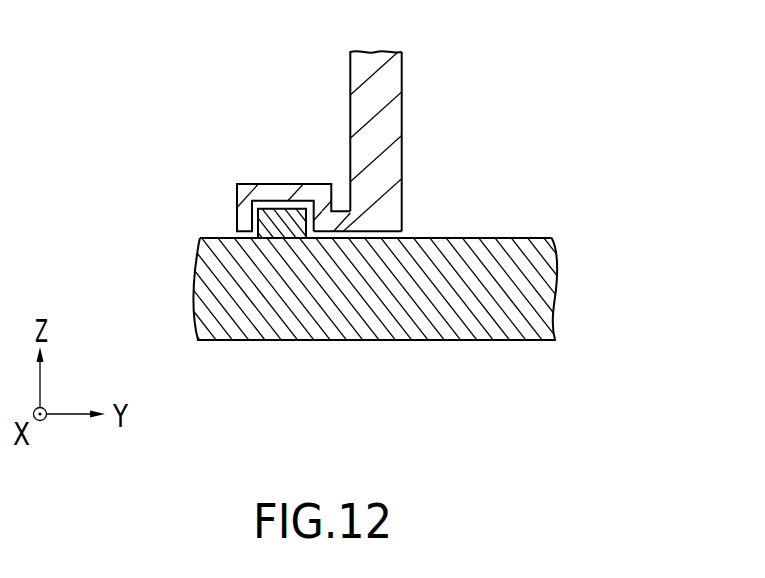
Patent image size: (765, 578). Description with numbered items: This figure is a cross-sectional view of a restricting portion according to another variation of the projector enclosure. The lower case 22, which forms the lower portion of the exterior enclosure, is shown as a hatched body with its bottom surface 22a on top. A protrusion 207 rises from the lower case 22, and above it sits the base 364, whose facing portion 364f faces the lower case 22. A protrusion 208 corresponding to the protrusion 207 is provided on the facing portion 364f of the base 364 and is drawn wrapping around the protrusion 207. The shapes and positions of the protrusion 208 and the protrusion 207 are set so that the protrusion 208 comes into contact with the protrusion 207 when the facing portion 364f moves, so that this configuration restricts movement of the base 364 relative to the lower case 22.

The lower case 22 is at (536, 293).
The bottom surface 22a is at (536, 238).
The protrusion 207 is at (247, 220).
The protrusion 208 is at (270, 173).
The base 364 is at (387, 77).
The facing portion 364f is at (412, 177).